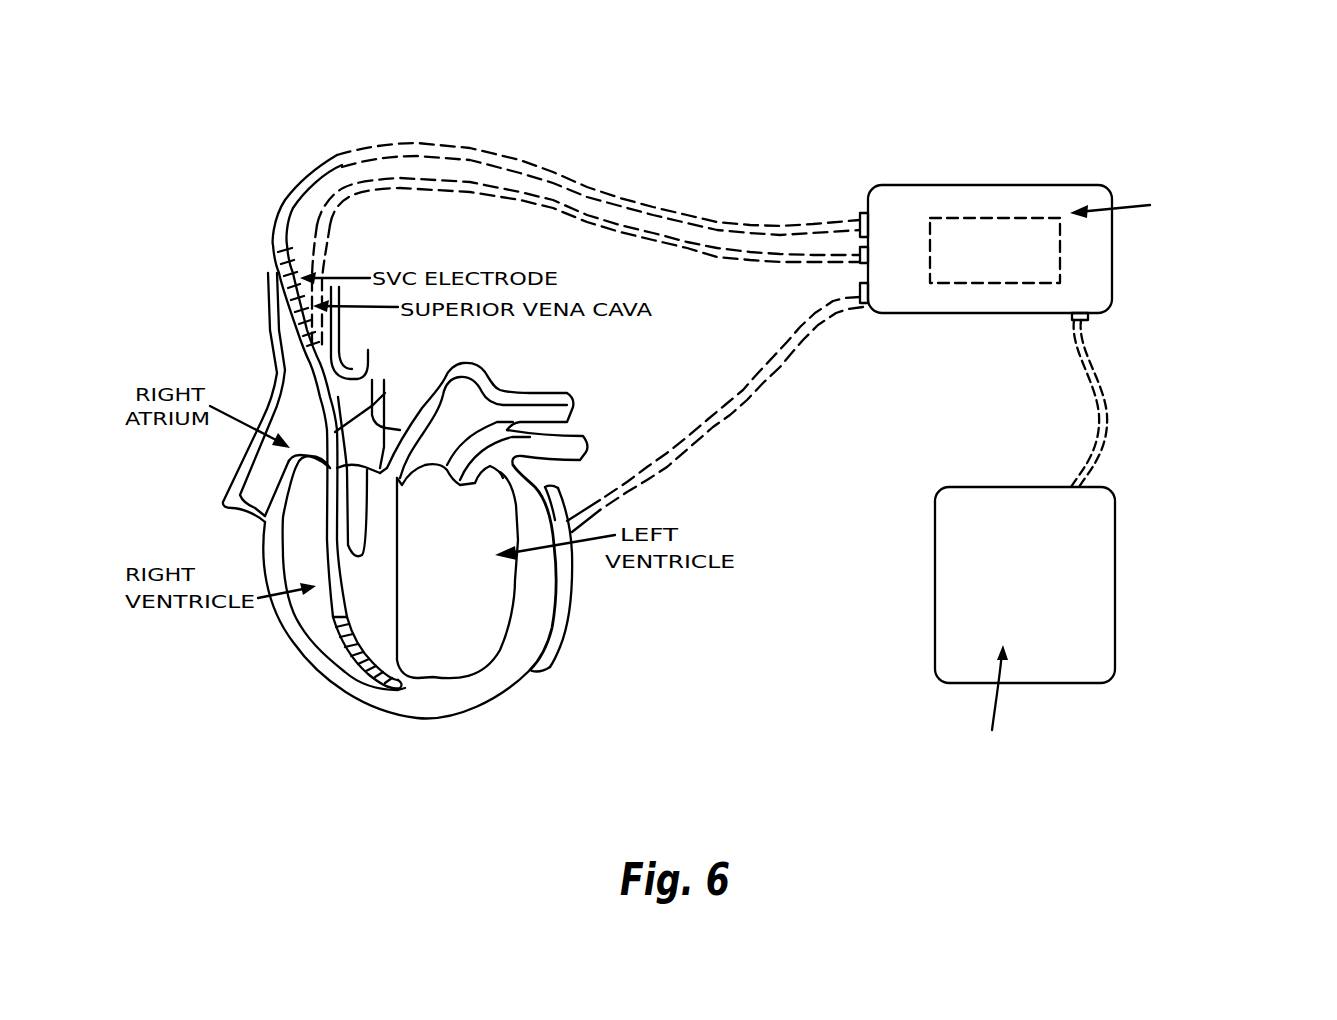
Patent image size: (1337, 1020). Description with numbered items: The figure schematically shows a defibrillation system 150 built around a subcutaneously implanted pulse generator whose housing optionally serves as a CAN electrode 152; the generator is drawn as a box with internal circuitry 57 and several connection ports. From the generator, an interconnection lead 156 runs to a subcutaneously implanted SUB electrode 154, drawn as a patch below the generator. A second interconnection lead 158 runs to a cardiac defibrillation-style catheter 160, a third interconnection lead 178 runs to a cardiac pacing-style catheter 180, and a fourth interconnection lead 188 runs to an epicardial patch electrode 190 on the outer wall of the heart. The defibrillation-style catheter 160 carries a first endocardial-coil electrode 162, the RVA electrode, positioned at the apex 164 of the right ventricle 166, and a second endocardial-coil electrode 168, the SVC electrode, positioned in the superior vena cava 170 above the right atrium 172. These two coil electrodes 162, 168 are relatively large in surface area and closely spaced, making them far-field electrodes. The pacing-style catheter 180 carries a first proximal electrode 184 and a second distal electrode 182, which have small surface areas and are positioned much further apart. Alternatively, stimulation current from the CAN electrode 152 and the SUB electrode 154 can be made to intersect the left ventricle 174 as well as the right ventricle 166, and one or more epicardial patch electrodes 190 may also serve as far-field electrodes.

The defibrillation system 150 is at (768, 115).
The CAN electrode 152 is at (983, 185).
The SUB electrode 154 is at (1115, 583).
The interconnection lead 156 is at (1108, 413).
The pulse generator circuitry 57 is at (1000, 257).
The interconnection lead 158 is at (780, 230).
The cardiac defibrillation-style catheter 160 is at (277, 213).
The first endocardial-coil electrode 162 is at (357, 620).
The apex 164 is at (345, 676).
The right ventricle 166 is at (297, 518).
The second endocardial-coil electrode 168 is at (292, 257).
The superior vena cava 170 is at (310, 323).
The right atrium 172 is at (303, 390).
The left ventricle 174 is at (483, 603).
The interconnection lead 178 is at (755, 265).
The cardiac pacing-style catheter 180 is at (322, 257).
The second distal electrode 182 is at (363, 530).
The first proximal electrode 184 is at (391, 385).
The interconnection lead 188 is at (804, 360).
The epicardial patch electrode 190 is at (553, 653).